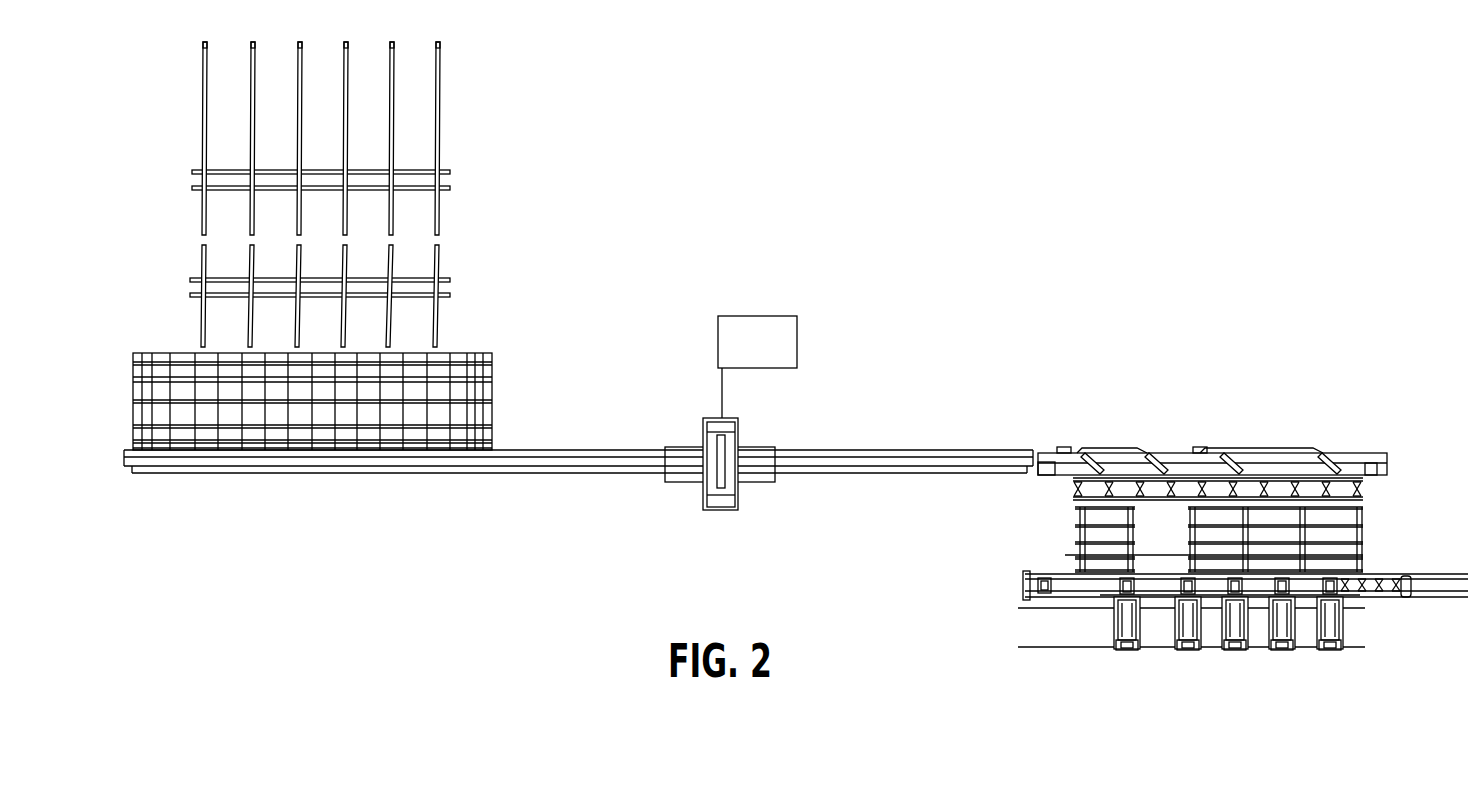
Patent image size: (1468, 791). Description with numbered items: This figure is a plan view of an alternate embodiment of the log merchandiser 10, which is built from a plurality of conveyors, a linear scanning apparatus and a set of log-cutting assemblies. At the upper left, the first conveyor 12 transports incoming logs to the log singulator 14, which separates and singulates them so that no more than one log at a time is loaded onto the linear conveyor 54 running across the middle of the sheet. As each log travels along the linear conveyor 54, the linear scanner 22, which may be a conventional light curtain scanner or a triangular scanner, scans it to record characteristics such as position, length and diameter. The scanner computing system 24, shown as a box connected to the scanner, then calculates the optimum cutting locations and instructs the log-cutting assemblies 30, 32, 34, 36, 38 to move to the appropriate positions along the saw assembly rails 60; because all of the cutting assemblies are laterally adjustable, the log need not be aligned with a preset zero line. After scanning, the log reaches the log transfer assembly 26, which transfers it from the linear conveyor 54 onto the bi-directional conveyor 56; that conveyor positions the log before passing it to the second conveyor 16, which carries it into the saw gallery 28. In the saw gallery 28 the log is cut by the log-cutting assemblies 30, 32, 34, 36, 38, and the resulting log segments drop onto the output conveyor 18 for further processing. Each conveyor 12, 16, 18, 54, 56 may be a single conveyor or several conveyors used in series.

The log merchandiser 10 is at (1050, 222).
The first conveyor 12 is at (478, 87).
The log singulator 14 is at (520, 394).
The second conveyor 16 is at (1386, 538).
The output conveyor 18 is at (1444, 614).
The linear scanner 22 is at (705, 510).
The scanner computing system 24 is at (760, 316).
The log transfer assembly 26 is at (1326, 436).
The saw gallery 28 is at (1086, 670).
The log-cutting assembly 30 is at (1330, 668).
The log-cutting assembly 32 is at (1282, 668).
The log-cutting assembly 34 is at (1235, 668).
The log-cutting assembly 36 is at (1188, 668).
The log-cutting assembly 38 is at (1127, 668).
The linear conveyor 54 is at (533, 506).
The bi-directional conveyor 56 is at (1380, 484).
The saw assembly rails 60 is at (1018, 647).